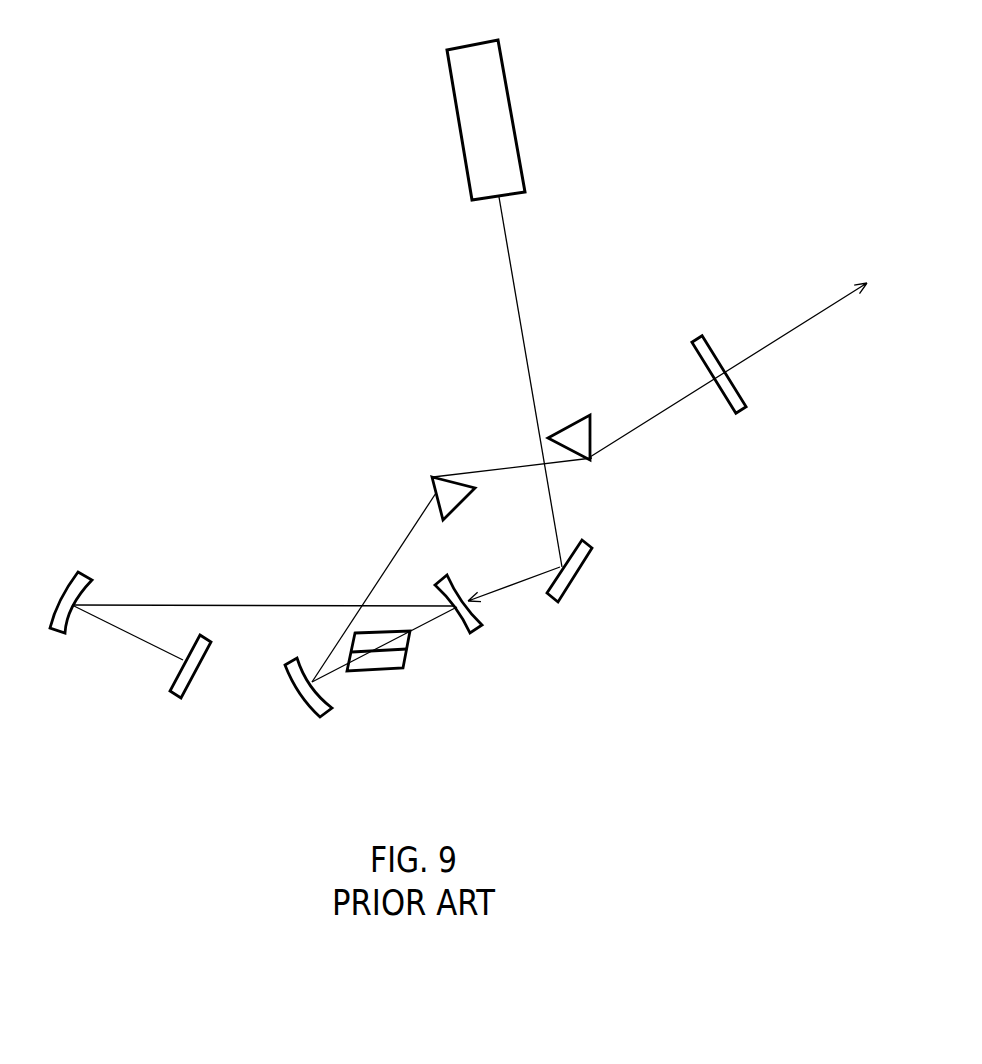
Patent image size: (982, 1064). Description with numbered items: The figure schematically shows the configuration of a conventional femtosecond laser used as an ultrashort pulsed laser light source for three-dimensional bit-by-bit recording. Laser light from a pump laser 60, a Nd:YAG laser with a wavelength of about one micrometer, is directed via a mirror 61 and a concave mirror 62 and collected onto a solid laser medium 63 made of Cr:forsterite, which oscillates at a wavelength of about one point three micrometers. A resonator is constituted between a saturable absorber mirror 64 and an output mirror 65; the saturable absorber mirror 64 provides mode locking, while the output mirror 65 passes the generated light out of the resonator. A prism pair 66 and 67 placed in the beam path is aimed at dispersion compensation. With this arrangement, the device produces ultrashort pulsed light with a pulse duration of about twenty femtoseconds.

The pump laser 60 is at (513, 110).
The mirror 61 is at (583, 567).
The concave mirror 62 is at (477, 627).
The solid laser medium 63 is at (388, 672).
The saturable absorber mirror 64 is at (188, 683).
The output mirror 65 is at (743, 393).
The prism 66 is at (432, 483).
The prism 67 is at (567, 424).